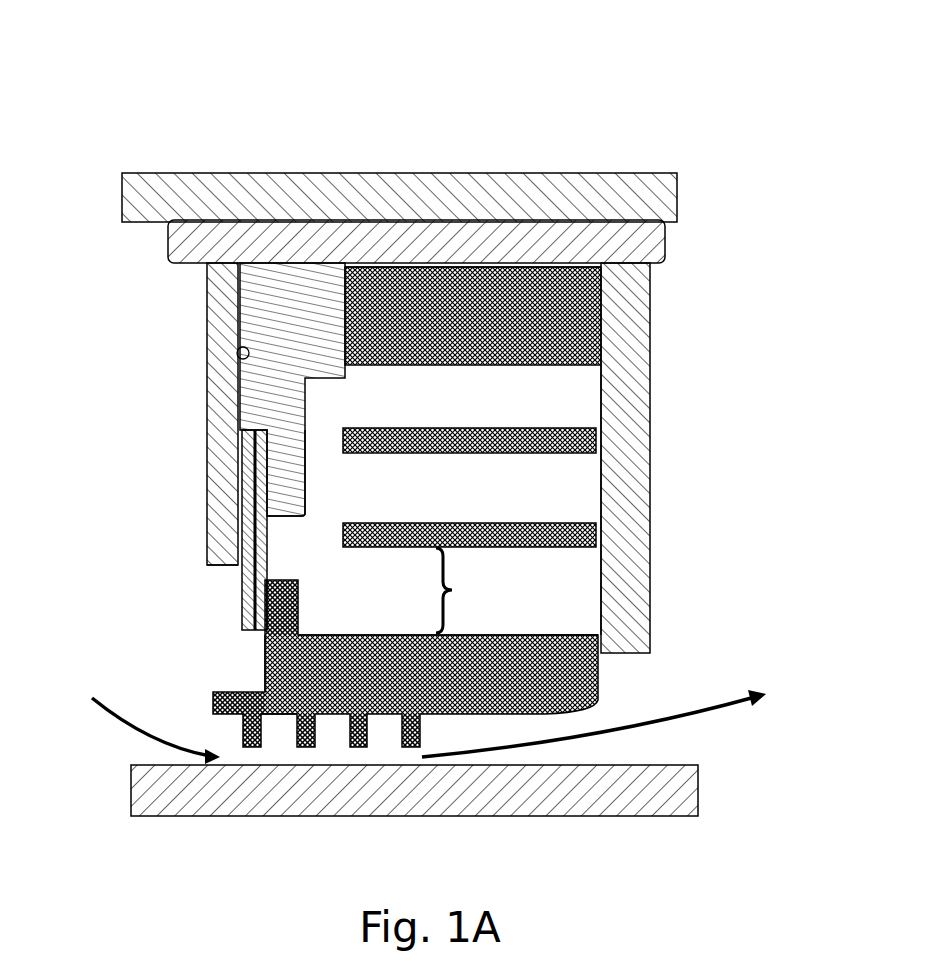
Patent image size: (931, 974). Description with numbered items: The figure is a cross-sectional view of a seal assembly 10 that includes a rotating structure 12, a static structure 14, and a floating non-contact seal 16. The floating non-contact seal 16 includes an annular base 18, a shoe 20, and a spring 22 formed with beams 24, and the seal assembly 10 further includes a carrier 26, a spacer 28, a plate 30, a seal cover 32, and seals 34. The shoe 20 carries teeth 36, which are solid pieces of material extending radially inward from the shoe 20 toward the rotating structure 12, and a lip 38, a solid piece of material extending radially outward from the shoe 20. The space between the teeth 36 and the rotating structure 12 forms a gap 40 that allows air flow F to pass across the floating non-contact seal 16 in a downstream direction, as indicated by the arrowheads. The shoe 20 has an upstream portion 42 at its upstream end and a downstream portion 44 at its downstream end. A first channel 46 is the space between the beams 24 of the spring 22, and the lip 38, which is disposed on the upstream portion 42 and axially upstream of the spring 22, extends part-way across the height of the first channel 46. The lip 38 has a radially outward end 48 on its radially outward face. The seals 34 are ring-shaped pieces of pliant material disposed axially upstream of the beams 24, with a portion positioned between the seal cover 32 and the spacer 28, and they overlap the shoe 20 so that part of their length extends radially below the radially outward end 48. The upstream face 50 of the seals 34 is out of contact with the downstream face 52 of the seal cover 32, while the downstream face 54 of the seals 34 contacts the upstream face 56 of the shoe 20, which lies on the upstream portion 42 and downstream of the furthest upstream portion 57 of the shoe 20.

The seal assembly 10 is at (127, 88).
The rotating structure 12 is at (698, 792).
The static structure 14 is at (123, 195).
The floating non-contact seal 16 is at (530, 343).
The annular base 18 is at (596, 297).
The shoe 20 is at (320, 683).
The spring 22 is at (536, 414).
The beams 24 is at (596, 443).
The carrier 26 is at (665, 245).
The spacer 28 is at (245, 390).
The plate 30 is at (650, 390).
The seal cover 32 is at (218, 300).
The seals 34 is at (242, 485).
The teeth 36 is at (423, 735).
The lip 38 is at (298, 615).
The gap 40 is at (293, 745).
The upstream portion 42 is at (330, 635).
The downstream portion 44 is at (550, 635).
The first channel 46 is at (455, 590).
The radially outward end 48 is at (282, 578).
The upstream face 50 is at (233, 538).
The downstream face 52 is at (237, 353).
The downstream face 54 is at (267, 473).
The upstream face 56 is at (265, 643).
The furthest upstream portion 57 is at (213, 700).
The air flow F is at (118, 730).